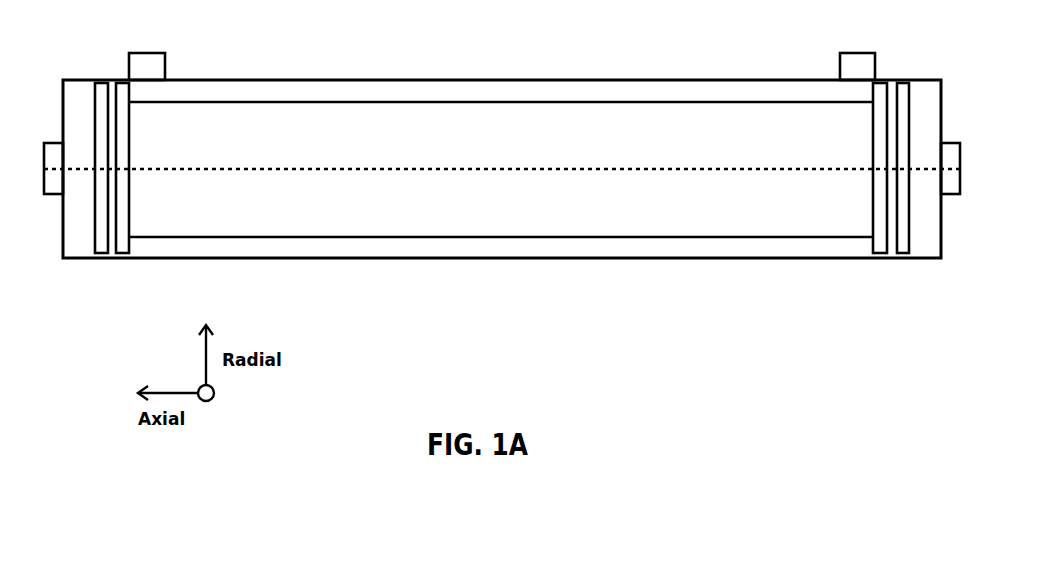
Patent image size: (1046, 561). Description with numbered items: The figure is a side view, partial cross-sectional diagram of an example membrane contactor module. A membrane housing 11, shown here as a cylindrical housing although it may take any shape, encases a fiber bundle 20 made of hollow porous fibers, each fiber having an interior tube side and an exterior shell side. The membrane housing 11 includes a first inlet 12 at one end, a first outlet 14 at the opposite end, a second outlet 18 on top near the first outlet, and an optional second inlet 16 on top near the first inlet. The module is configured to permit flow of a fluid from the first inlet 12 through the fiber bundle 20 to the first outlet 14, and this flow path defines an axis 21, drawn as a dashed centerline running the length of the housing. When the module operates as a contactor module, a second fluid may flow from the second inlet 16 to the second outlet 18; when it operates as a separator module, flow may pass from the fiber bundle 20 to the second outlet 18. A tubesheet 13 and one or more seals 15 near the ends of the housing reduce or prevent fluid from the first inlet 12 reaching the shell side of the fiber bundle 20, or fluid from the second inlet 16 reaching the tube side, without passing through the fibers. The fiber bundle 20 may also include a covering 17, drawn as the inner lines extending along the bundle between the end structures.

The fiber bundle 20 is at (531, 80).
The membrane housing 11 is at (679, 80).
The first inlet 12 is at (62, 195).
The tubesheet 13 is at (883, 237).
The first outlet 14 is at (950, 195).
The seal 15 is at (892, 258).
The second inlet 16 is at (147, 53).
The covering 17 is at (713, 237).
The second outlet 18 is at (857, 53).
The axis 21 is at (377, 168).